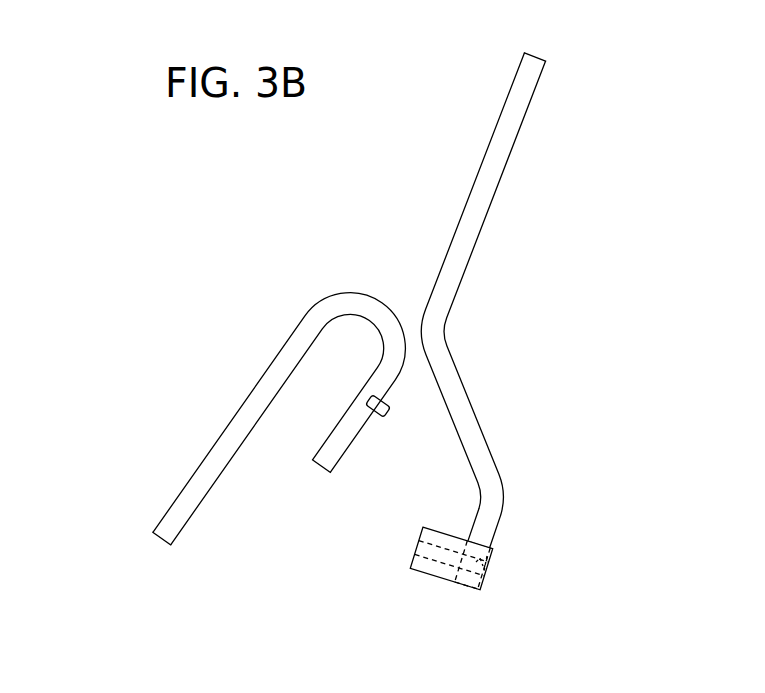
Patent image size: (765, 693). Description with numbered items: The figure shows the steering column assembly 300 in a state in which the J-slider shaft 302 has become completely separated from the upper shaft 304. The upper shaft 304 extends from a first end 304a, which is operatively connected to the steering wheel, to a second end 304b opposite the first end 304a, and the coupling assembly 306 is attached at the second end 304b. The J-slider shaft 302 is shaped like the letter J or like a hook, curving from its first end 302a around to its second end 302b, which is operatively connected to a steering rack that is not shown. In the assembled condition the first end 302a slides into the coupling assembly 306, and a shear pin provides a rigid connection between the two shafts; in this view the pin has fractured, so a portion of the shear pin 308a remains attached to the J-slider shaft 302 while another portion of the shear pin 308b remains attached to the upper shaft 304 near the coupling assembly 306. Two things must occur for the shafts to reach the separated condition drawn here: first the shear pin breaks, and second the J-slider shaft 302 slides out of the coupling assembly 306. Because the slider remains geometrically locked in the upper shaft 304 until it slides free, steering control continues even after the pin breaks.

The steering column assembly 300 is at (283, 235).
The J-slider shaft 302 is at (236, 424).
The first end of J-slider shaft 302a is at (340, 465).
The second end of J-slider shaft 302b is at (155, 533).
The upper shaft 304 is at (541, 348).
The first end of upper shaft 304a is at (536, 63).
The second end of upper shaft 304b is at (465, 593).
The coupling assembly 306 is at (425, 573).
The portion of shear pin 308a is at (381, 414).
The portion of shear pin 308b is at (485, 577).